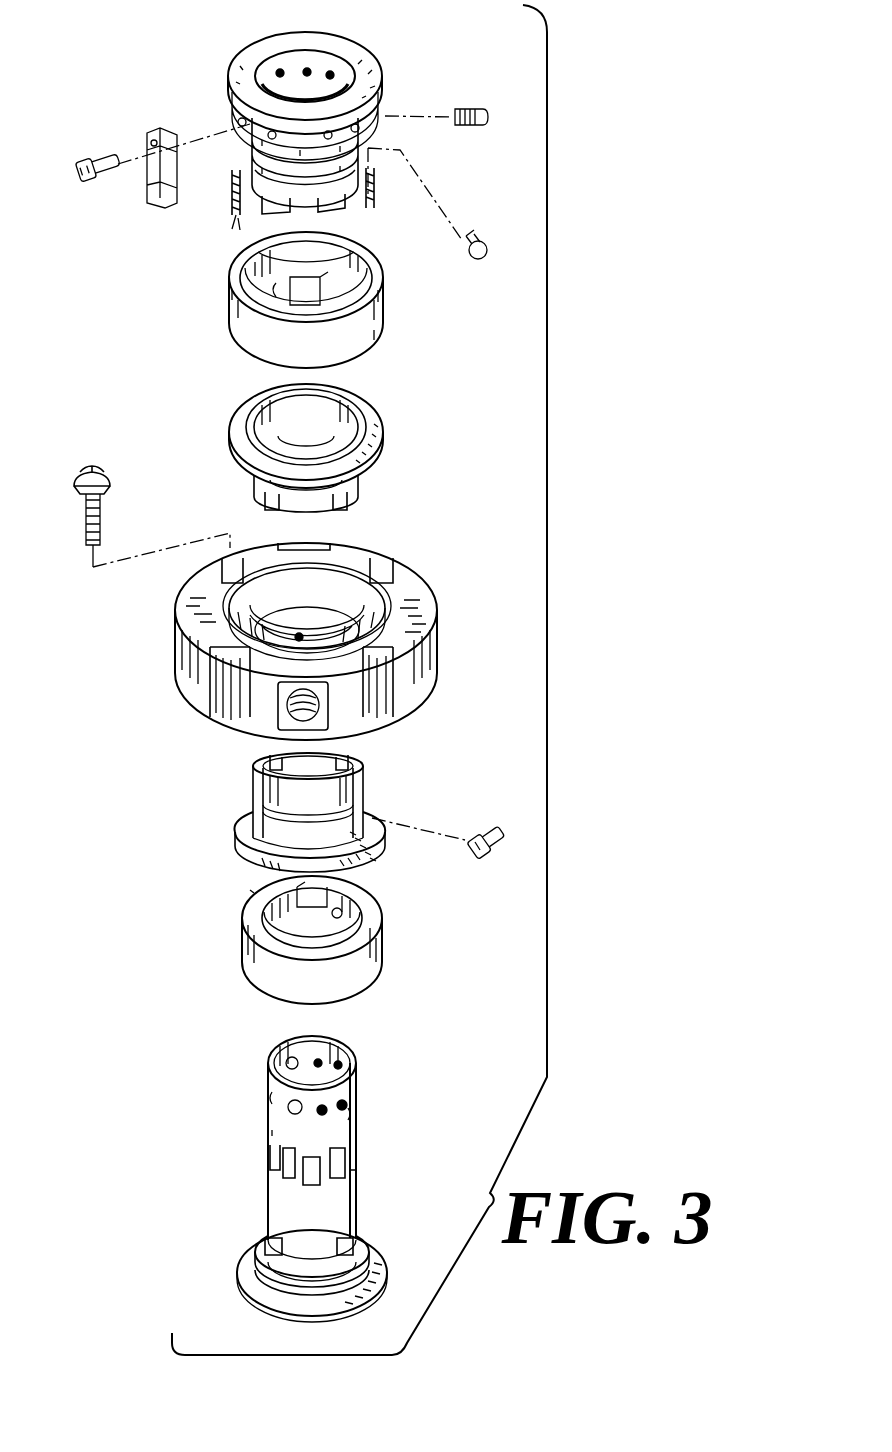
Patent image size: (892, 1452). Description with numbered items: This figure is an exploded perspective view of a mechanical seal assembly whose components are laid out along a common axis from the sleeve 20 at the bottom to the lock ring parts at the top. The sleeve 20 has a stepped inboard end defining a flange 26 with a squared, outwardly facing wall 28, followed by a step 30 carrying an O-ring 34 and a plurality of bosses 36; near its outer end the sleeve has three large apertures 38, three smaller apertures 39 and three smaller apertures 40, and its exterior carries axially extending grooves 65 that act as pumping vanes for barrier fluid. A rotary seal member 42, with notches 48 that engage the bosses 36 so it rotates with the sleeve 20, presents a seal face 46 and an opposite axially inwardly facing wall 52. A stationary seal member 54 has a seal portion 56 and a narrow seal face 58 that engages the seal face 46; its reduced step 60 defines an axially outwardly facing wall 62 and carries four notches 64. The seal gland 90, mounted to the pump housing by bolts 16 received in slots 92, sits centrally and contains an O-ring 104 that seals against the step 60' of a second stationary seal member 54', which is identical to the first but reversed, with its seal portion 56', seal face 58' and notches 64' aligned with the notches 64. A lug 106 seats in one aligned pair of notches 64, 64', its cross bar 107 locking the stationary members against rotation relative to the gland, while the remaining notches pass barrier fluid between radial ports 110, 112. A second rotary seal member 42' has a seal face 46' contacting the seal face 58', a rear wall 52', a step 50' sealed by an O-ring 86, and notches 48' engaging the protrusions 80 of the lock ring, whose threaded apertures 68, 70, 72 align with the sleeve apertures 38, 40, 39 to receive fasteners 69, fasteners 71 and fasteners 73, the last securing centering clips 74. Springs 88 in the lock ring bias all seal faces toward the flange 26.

The bolts 16 is at (106, 498).
The sleeve 20 is at (272, 1185).
The flange 26 is at (388, 1280).
The outwardly facing wall 28 is at (250, 1258).
The step 30 is at (316, 1282).
The O-ring 34 is at (254, 1288).
The bosses 36 is at (356, 1245).
The large apertures 38 is at (286, 1096).
The smaller apertures 39 is at (270, 1098).
The smaller apertures 40 is at (241, 1120).
The rotary seal member 42 is at (284, 940).
The second rotary seal member 42' is at (273, 300).
The seal face 46 is at (222, 908).
The seal face 46' is at (401, 348).
The notches 48 is at (360, 893).
The notches 48' is at (359, 282).
The step 50' is at (338, 244).
The axially inwardly facing wall 52 is at (385, 926).
The wall 52' is at (219, 287).
The stationary seal member 54 is at (343, 795).
The second stationary seal member 54' is at (353, 472).
The seal portion 56 is at (343, 857).
The seal portion 56' is at (333, 434).
The seal face 58 is at (240, 876).
The seal face 58' is at (277, 419).
The step 60 is at (282, 403).
The step 60' is at (265, 472).
The axially outwardly facing wall 62 is at (245, 822).
The notches 64 is at (311, 762).
The notches 64' is at (312, 506).
The axially extending grooves 65 is at (284, 1160).
The threaded apertures 68 is at (268, 64).
The fasteners 69 is at (478, 110).
The threaded apertures 70 is at (352, 70).
The threaded fasteners 71 is at (480, 248).
The threaded apertures 72 is at (318, 70).
The threaded fasteners 73 is at (86, 182).
The centering clips 74 is at (152, 205).
The protrusions 80 is at (244, 222).
The O-ring 86 is at (250, 175).
The springs 88 is at (232, 202).
The seal gland 90 is at (178, 655).
The slots 92 is at (220, 566).
The O-ring 104 is at (405, 590).
The lug 106 is at (478, 838).
The cross bar 107 is at (497, 838).
The radial port 110 is at (283, 705).
The radial port 112 is at (330, 634).